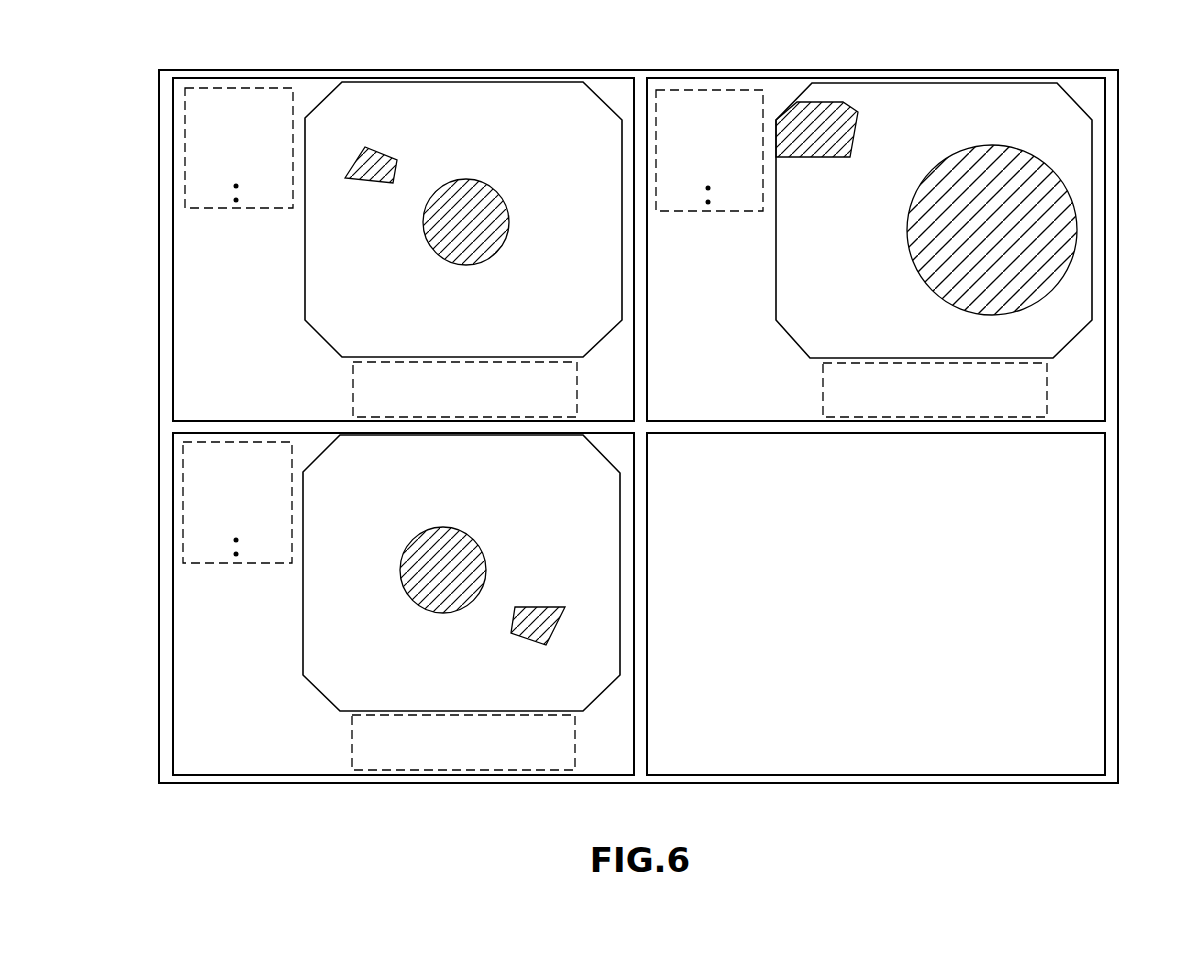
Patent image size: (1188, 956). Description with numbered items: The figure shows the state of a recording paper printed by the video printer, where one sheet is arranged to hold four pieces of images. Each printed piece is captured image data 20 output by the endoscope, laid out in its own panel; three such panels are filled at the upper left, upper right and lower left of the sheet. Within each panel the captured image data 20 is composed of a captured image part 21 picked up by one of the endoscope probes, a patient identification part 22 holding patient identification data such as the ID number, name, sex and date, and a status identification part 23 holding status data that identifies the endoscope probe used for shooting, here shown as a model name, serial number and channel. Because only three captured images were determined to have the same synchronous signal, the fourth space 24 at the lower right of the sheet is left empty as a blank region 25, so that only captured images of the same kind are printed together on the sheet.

The captured image data 20 is at (618, 100).
The captured image part 21 is at (433, 98).
The patient identification part 22 is at (241, 90).
The status identification part 23 is at (353, 380).
The empty display panel 24 is at (1085, 757).
The blank region 25 is at (832, 685).